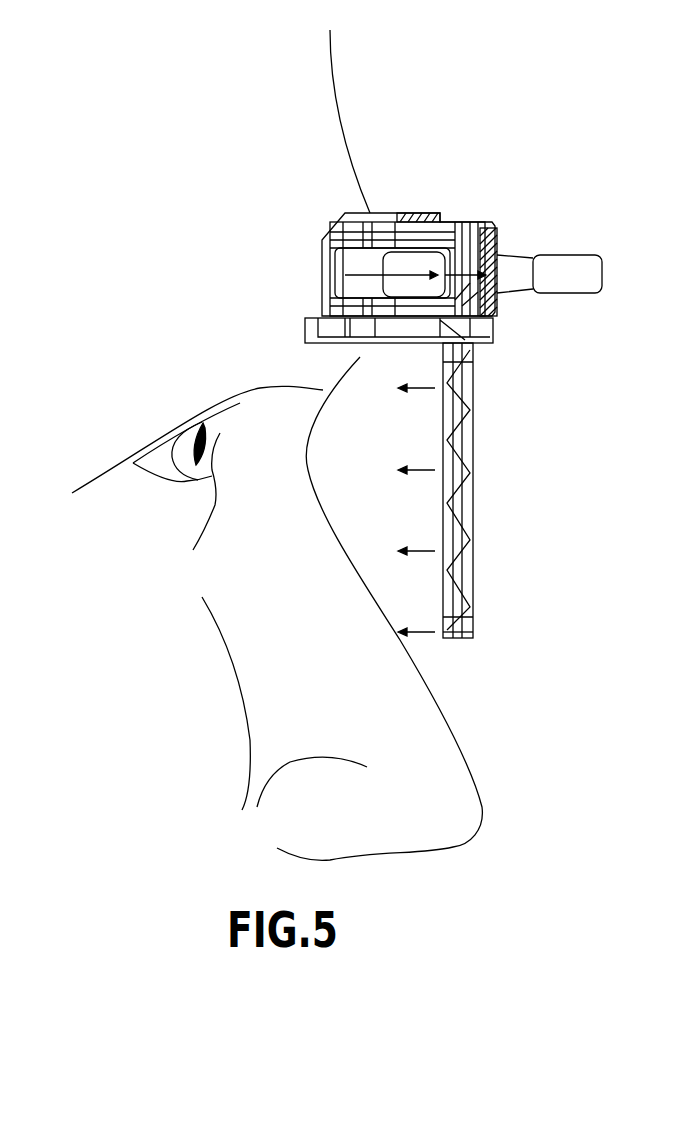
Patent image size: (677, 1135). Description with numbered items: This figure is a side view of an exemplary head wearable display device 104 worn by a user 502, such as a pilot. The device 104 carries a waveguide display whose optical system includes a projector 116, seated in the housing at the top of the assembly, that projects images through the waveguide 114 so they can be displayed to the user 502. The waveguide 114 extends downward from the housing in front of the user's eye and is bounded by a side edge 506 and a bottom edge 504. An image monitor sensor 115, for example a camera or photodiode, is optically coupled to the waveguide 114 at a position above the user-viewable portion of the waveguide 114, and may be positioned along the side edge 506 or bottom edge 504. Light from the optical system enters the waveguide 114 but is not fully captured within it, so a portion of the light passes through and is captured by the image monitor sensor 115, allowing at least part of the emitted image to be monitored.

The user 502 is at (148, 342).
The projector 116 is at (374, 211).
The head wearable display device 104 is at (465, 222).
The image monitor sensor 115 is at (568, 252).
The waveguide 114 is at (502, 516).
The side edge 506 is at (457, 568).
The bottom edge 504 is at (457, 638).